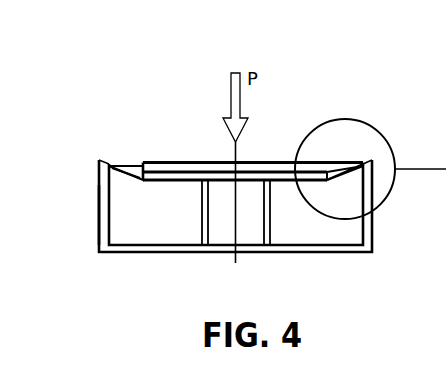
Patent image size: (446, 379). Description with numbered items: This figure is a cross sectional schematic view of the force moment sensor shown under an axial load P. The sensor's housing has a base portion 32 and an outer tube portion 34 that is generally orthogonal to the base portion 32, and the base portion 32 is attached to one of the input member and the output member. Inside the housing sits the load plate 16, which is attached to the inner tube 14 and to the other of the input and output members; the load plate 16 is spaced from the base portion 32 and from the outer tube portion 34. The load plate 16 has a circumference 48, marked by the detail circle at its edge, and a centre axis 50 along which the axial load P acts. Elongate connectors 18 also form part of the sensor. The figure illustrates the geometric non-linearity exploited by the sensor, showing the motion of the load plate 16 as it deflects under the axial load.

The inner tube 14 is at (202, 222).
The load plate 16 is at (172, 162).
The elongate connectors 18 is at (131, 166).
The base portion 32 is at (105, 252).
The outer tube portion 34 is at (99, 213).
The circumference 48 is at (337, 163).
The centre axis 50 is at (239, 187).